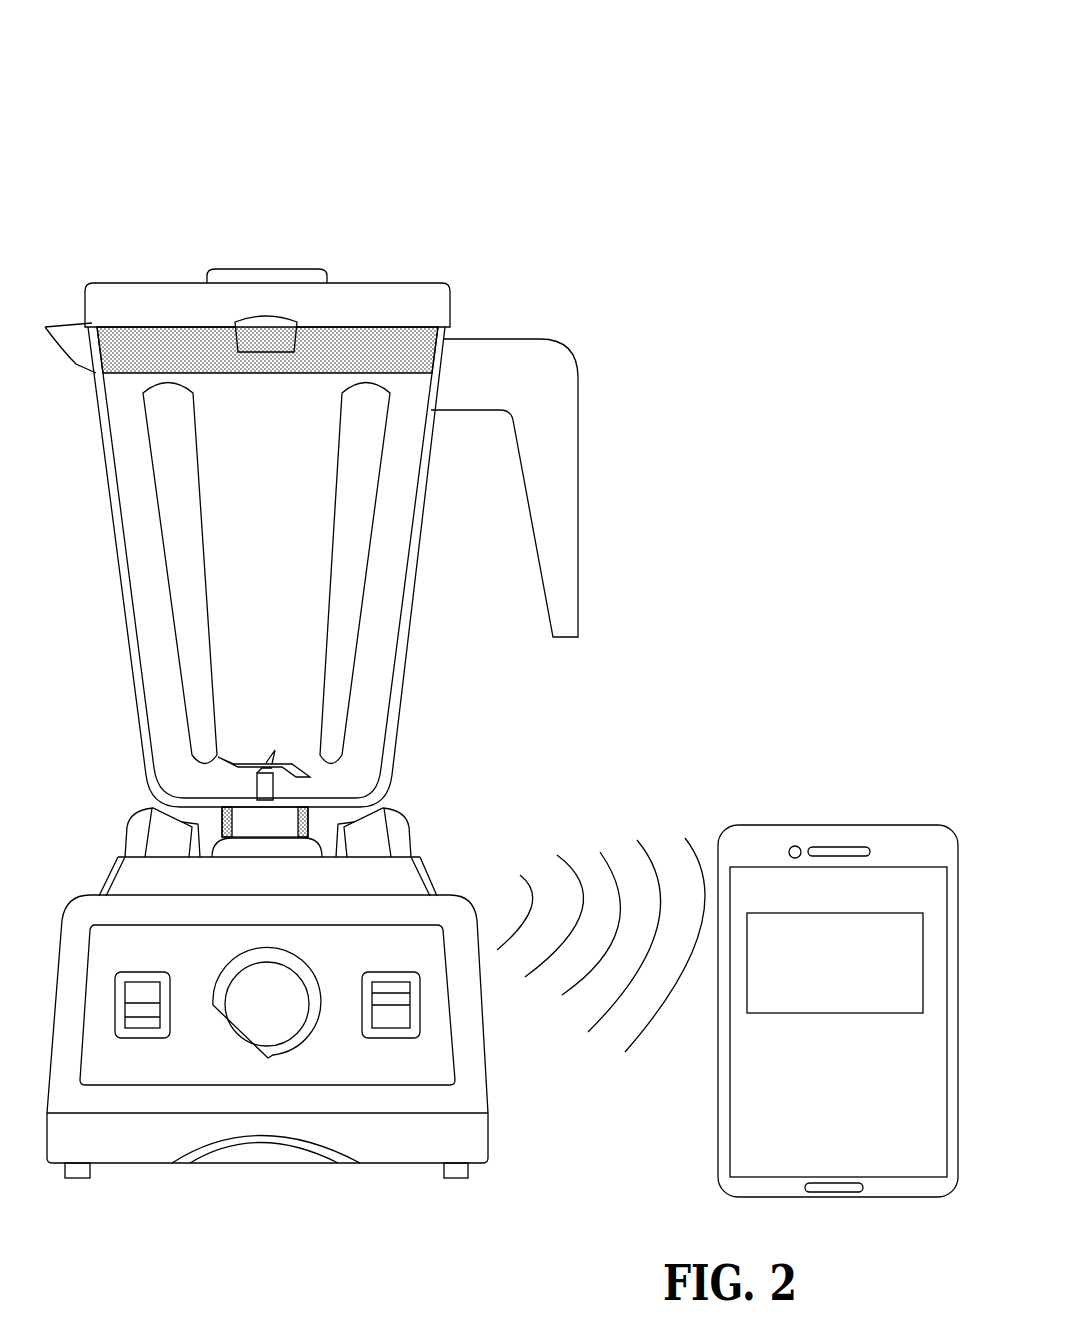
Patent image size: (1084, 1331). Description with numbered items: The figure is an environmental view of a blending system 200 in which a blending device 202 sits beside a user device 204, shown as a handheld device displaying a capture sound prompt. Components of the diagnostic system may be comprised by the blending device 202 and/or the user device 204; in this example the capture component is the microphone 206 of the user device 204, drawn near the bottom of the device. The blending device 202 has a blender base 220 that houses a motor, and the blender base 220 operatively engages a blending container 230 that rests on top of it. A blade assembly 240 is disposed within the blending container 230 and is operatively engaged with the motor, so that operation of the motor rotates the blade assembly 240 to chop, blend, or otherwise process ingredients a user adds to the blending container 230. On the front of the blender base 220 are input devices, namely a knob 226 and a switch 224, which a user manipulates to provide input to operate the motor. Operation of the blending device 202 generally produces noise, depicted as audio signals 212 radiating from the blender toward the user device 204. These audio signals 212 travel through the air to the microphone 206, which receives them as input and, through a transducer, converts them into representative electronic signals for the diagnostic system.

The blending system 200 is at (722, 108).
The blending device 202 is at (135, 190).
The user device 204 is at (806, 800).
The microphone 206 is at (836, 1192).
The audio signals 212 is at (582, 845).
The blender base 220 is at (433, 1147).
The switch 224 is at (147, 1038).
The knob 226 is at (273, 1057).
The blending container 230 is at (418, 706).
The blade assembly 240 is at (318, 784).